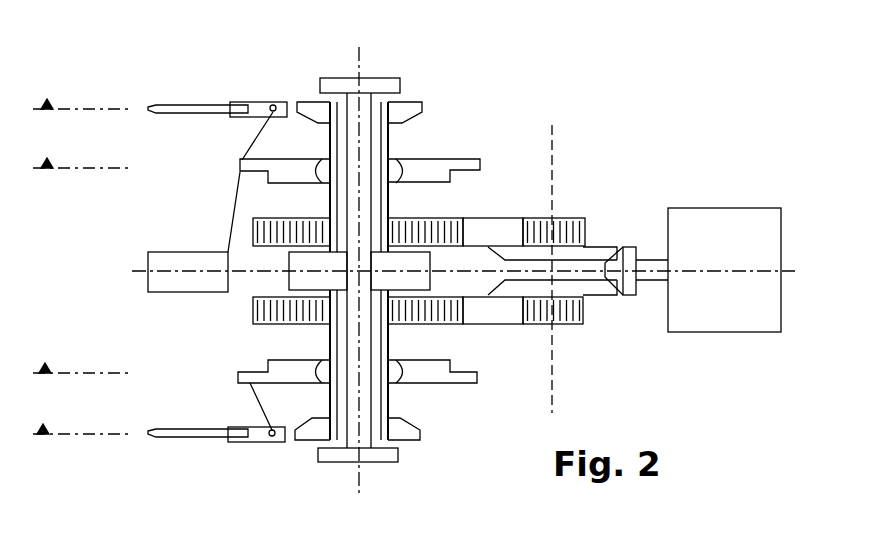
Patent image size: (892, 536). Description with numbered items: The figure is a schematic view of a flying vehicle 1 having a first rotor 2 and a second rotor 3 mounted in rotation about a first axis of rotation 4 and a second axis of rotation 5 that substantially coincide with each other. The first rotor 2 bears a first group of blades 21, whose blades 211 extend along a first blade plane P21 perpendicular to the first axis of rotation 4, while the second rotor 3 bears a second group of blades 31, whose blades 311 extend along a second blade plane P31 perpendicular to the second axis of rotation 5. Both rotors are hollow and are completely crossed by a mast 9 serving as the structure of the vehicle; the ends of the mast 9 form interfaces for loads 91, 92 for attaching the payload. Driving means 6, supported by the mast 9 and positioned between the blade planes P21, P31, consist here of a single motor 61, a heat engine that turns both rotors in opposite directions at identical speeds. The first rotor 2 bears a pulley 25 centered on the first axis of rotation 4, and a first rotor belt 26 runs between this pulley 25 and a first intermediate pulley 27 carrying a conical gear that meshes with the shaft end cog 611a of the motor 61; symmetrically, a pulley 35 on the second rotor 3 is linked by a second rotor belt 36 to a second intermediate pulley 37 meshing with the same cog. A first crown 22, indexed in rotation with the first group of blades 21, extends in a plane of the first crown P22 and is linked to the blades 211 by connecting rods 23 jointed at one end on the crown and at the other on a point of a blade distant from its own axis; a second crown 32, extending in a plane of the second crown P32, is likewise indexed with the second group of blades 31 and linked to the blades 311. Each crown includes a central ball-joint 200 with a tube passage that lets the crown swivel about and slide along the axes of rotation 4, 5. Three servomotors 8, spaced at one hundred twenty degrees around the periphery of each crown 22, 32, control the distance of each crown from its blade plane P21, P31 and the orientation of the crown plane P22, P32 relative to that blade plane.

The flying vehicle 1 is at (649, 88).
The first rotor 2 is at (417, 106).
The second rotor 3 is at (413, 432).
The first axis of rotation 4 is at (358, 60).
The second axis of rotation 5 is at (357, 433).
The driving means 6 is at (724, 230).
The servomotors 8 is at (203, 252).
The mast 9 is at (373, 390).
The first group of blades 21 is at (263, 102).
The first crown 22 is at (480, 163).
The connecting rods of the first rotor 23 is at (262, 130).
The pulley for driving the first rotor 25 is at (418, 218).
The first rotor belt 26 is at (493, 232).
The first intermediate pulley 27 is at (568, 218).
The second group of blades 31 is at (258, 443).
The second crown 32 is at (462, 385).
The pulley for driving the second rotor 35 is at (422, 323).
The second rotor belt 36 is at (493, 310).
The second intermediate pulley 37 is at (570, 324).
The motor 61 is at (724, 270).
The interface for loads 91 is at (385, 78).
The interface for loads 92 is at (378, 462).
The central ball-joint 200 is at (404, 170).
The blades 211 is at (180, 105).
The blades 311 is at (180, 440).
The coupling 611a is at (632, 247).
The first blade plane P21 is at (47, 99).
The plane of the first crown P22 is at (48, 166).
The second blade plane P31 is at (44, 432).
The plane of the second crown P32 is at (45, 371).